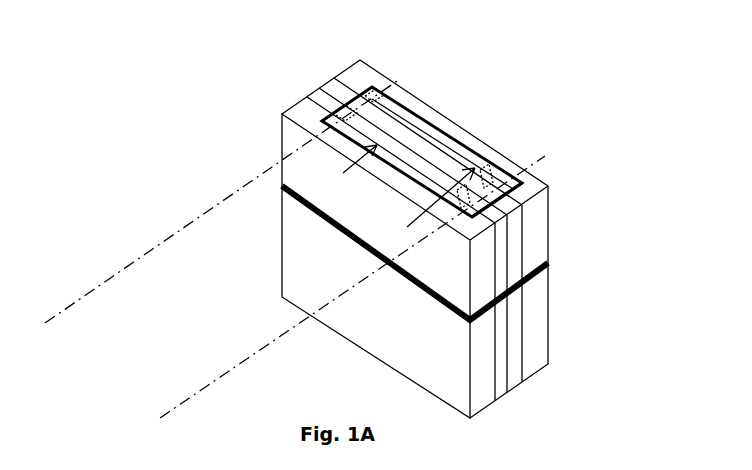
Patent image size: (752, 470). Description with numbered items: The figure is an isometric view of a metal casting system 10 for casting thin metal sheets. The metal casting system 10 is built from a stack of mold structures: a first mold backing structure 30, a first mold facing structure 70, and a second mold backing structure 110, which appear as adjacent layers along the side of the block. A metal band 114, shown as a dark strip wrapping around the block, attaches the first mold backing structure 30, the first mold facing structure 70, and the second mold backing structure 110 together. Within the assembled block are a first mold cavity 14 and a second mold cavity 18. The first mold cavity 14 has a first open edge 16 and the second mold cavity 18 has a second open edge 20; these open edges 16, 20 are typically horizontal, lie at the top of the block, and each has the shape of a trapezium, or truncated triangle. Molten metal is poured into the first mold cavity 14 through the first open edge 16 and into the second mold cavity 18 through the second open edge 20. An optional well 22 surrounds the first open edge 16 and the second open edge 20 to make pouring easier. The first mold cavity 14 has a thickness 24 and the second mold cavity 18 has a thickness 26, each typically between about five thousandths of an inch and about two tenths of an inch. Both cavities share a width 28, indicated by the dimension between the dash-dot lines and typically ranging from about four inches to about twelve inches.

The metal casting system 10 is at (253, 123).
The first mold cavity 14 is at (345, 107).
The first open edge 16 is at (367, 130).
The second mold cavity 18 is at (450, 148).
The second open edge 20 is at (465, 142).
The well 22 is at (525, 175).
The thickness 24 is at (402, 122).
The thickness 26 is at (490, 150).
The width 28 is at (197, 383).
The first mold backing structure 30 is at (521, 386).
The first mold facing structure 70 is at (491, 405).
The second mold backing structure 110 is at (549, 368).
The metal band 114 is at (342, 228).